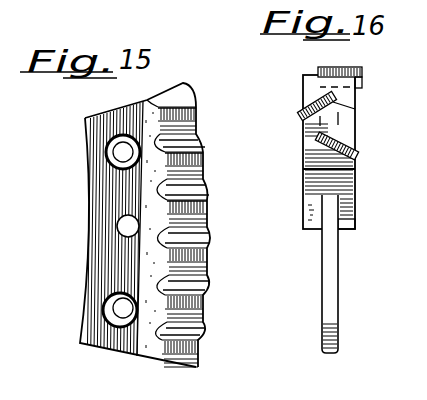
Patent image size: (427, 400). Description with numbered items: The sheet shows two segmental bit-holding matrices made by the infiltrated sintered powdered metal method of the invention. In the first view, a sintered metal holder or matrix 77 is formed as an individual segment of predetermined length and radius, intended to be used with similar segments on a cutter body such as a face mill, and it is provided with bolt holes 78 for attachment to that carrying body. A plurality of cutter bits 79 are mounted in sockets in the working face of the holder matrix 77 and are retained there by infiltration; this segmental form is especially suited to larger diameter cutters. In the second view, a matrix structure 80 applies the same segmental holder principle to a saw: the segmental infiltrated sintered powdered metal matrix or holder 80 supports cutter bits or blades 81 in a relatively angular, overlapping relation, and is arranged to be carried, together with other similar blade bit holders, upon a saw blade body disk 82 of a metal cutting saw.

In FIG. 15, the sintered metal holder or matrix 77 is at (105, 250).
In FIG. 15, the bolt holes 78 is at (114, 162).
In FIG. 15, the cutter bits 79 is at (195, 112).
In FIG. 16, the matrix structure 80 is at (355, 170).
In FIG. 16, the cutter bits or blades 81 is at (362, 82).
In FIG. 16, the saw blade body disk 82 is at (330, 277).